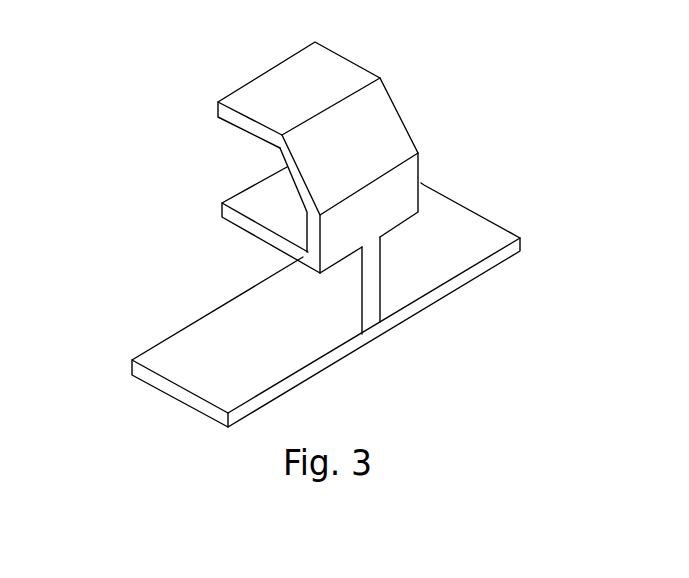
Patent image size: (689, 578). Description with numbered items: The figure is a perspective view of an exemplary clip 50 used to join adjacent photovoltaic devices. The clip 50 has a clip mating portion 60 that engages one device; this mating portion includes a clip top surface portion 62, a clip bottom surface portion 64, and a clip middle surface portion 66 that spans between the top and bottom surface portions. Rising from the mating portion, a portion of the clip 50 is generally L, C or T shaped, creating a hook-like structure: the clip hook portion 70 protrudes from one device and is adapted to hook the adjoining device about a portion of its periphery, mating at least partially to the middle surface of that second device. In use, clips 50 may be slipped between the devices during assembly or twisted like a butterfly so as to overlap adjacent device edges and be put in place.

The clip 50 is at (405, 40).
The clip mating portion 60 is at (290, 264).
The clip top surface portion 62 is at (213, 380).
The clip bottom surface portion 64 is at (160, 393).
The clip middle surface portion 66 is at (245, 413).
The clip hook portion 70 is at (375, 133).